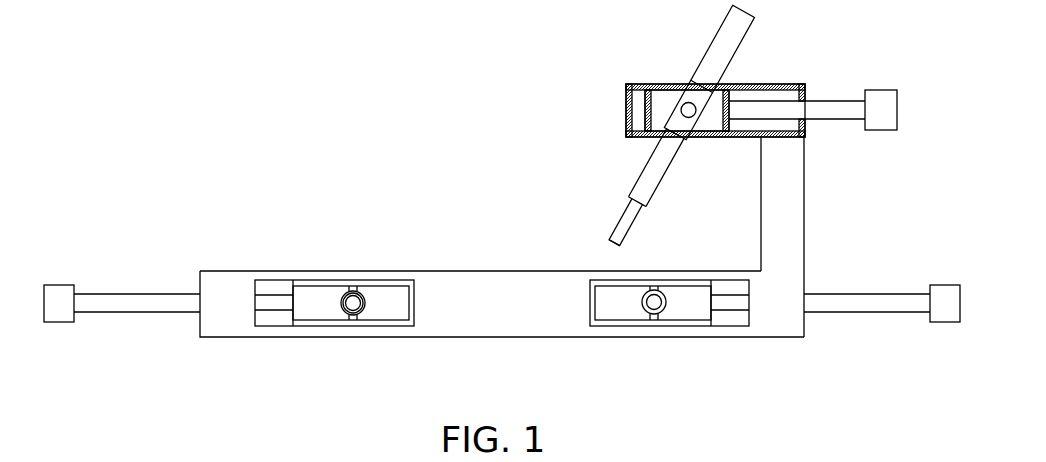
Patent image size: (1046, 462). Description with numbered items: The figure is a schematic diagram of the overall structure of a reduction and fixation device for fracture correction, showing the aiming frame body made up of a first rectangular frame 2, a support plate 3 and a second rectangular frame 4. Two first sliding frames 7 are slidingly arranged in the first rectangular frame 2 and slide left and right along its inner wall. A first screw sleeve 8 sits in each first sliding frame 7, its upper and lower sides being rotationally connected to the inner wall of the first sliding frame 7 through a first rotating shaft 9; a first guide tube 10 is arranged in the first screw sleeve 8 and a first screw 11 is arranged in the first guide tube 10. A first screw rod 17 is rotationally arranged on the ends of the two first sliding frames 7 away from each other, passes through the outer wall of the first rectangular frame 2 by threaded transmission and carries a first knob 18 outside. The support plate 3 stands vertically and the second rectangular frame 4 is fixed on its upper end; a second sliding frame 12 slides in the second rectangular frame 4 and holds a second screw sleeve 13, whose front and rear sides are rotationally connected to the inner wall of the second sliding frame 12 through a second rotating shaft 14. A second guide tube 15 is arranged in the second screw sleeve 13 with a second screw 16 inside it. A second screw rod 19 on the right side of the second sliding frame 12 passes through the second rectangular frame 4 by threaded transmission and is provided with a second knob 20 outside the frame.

The first rectangular frame 2 is at (213, 302).
The support plate 3 is at (792, 253).
The second rectangular frame 4 is at (628, 102).
The first sliding frame 7 is at (295, 298).
The first screw sleeve 8 is at (377, 315).
The first rotating shaft 9 is at (358, 284).
The first guide tube 10 is at (347, 315).
The first screw 11 is at (358, 310).
The second sliding frame 12 is at (732, 100).
The second screw sleeve 13 is at (682, 72).
The second rotating shaft 14 is at (682, 107).
The second guide tube 15 is at (725, 55).
The second screw 16 is at (625, 230).
The first screw rod 17 is at (120, 300).
The first knob 18 is at (58, 303).
The second screw rod 19 is at (815, 113).
The second knob 20 is at (883, 107).